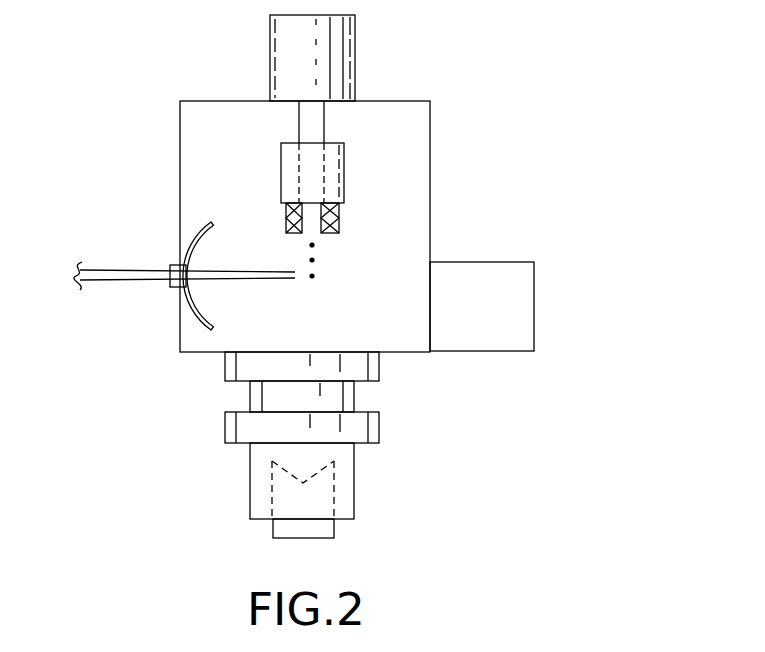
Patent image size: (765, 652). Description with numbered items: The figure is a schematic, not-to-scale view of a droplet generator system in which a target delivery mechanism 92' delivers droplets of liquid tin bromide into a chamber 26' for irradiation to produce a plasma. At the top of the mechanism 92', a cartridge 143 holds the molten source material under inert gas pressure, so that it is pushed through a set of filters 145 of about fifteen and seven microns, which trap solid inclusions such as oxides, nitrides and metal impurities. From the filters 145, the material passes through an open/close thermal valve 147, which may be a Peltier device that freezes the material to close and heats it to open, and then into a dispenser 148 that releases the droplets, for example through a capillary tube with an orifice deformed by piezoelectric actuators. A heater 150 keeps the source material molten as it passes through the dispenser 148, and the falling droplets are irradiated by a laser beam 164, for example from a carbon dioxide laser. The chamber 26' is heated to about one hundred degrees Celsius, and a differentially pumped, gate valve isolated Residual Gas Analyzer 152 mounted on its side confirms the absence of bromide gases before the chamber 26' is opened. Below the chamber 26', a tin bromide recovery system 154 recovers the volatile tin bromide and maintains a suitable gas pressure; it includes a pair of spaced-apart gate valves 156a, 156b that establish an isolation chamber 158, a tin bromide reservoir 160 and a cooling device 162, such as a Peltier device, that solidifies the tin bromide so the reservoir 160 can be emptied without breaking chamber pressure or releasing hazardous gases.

The target delivery mechanism 92' is at (332, 292).
The chamber 26' is at (305, 226).
The cartridge 143 is at (348, 43).
The set of filters 145 is at (316, 122).
The thermal valve 147 is at (345, 168).
The source material dispenser 148 is at (322, 237).
The heater 150 is at (286, 210).
The Residual Gas Analyzer 152 is at (512, 297).
The tin bromide recovery system 154 is at (183, 466).
The gate valve 156a is at (378, 370).
The gate valve 156b is at (378, 430).
The isolation chamber 158 is at (263, 398).
The tin bromide reservoir 160 is at (322, 503).
The cooling device 162 is at (279, 530).
The laser beam 164 is at (97, 270).